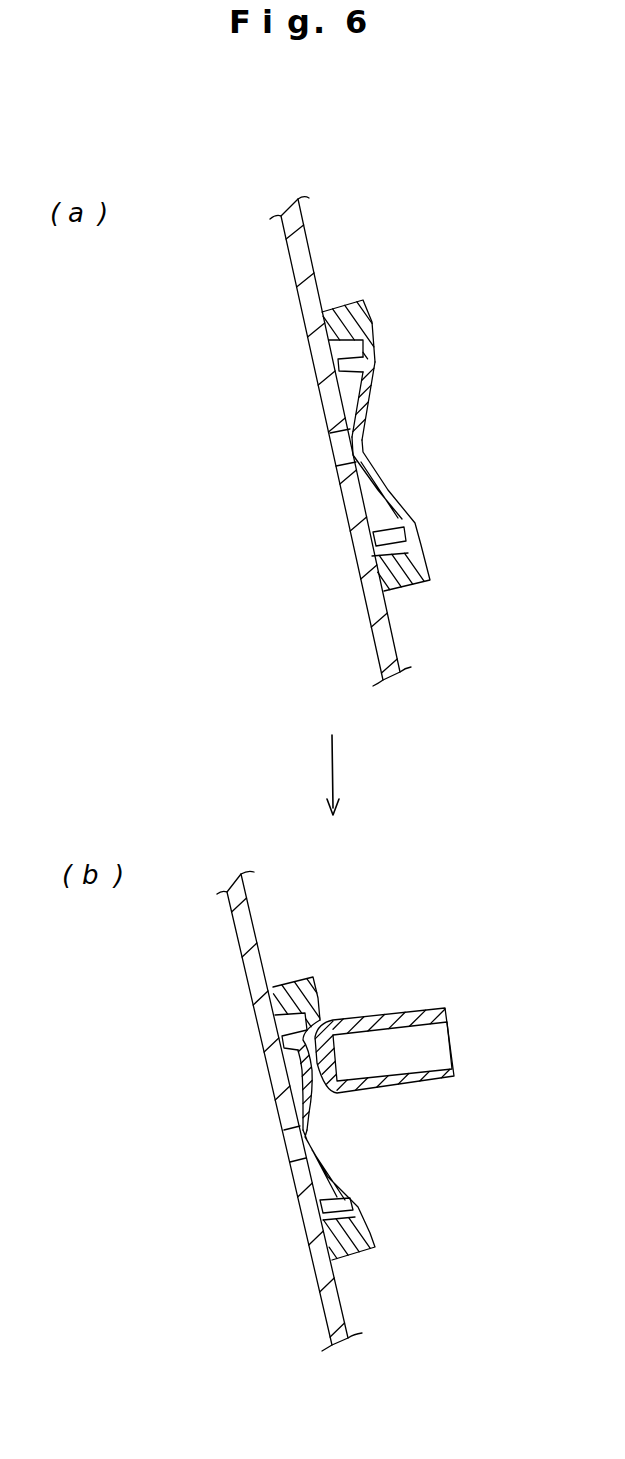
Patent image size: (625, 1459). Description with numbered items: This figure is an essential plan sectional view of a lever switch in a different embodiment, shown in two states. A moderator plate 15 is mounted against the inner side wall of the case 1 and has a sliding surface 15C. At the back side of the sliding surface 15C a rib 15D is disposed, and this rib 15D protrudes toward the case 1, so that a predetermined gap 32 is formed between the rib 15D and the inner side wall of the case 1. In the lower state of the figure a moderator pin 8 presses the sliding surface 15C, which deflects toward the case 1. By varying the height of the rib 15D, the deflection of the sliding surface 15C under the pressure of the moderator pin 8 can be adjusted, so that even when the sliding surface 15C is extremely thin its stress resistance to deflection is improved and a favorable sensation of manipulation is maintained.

The case 1 is at (382, 642).
The moderator plate 15 is at (421, 580).
The sliding surface 15C is at (373, 393).
The rib 15D is at (345, 368).
The gap 32 is at (378, 538).
The moderator pin 8 is at (418, 1017).